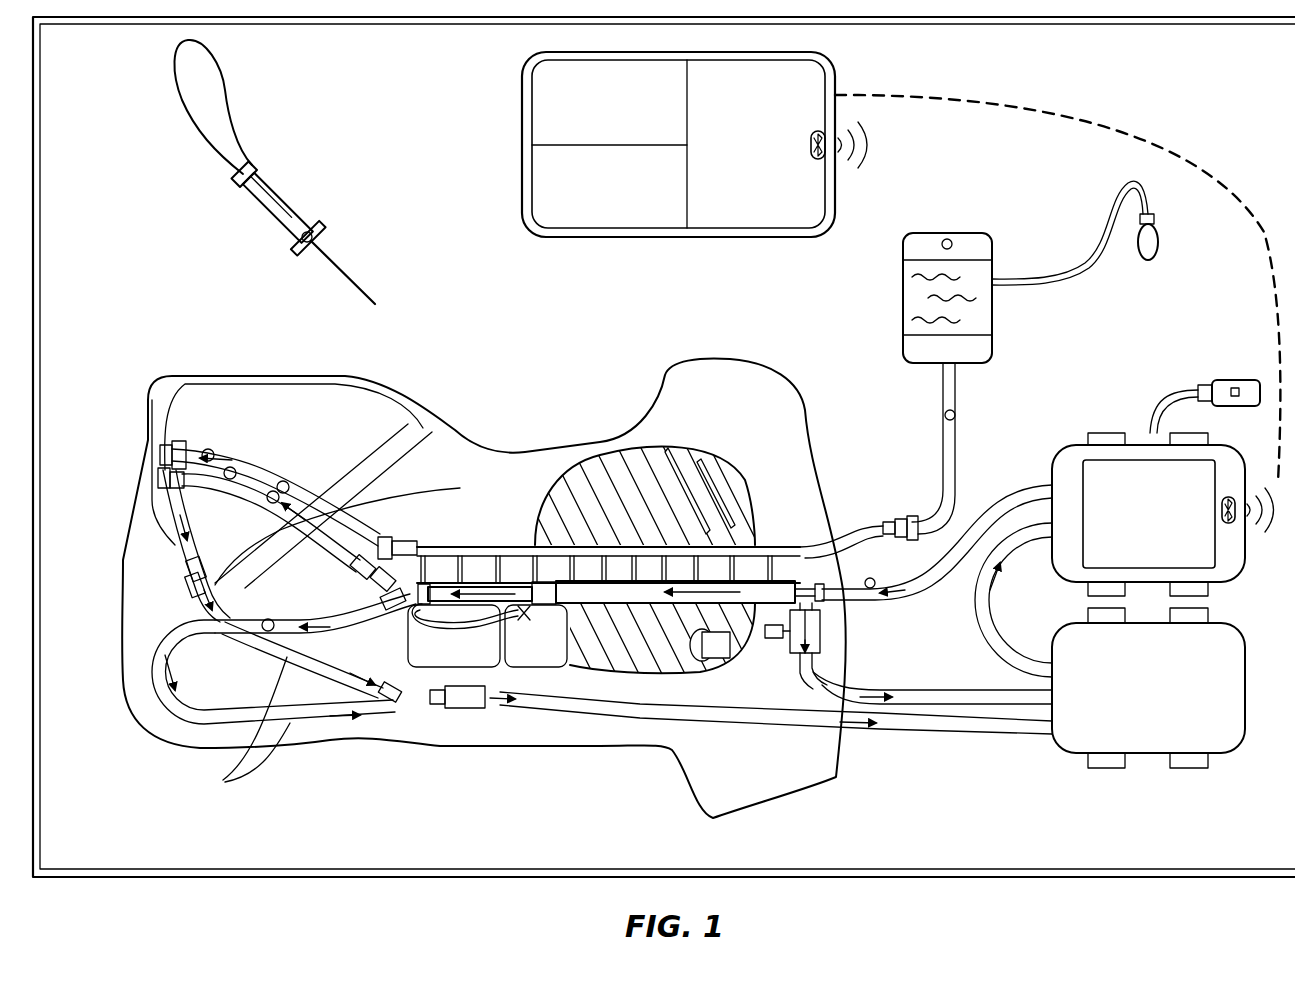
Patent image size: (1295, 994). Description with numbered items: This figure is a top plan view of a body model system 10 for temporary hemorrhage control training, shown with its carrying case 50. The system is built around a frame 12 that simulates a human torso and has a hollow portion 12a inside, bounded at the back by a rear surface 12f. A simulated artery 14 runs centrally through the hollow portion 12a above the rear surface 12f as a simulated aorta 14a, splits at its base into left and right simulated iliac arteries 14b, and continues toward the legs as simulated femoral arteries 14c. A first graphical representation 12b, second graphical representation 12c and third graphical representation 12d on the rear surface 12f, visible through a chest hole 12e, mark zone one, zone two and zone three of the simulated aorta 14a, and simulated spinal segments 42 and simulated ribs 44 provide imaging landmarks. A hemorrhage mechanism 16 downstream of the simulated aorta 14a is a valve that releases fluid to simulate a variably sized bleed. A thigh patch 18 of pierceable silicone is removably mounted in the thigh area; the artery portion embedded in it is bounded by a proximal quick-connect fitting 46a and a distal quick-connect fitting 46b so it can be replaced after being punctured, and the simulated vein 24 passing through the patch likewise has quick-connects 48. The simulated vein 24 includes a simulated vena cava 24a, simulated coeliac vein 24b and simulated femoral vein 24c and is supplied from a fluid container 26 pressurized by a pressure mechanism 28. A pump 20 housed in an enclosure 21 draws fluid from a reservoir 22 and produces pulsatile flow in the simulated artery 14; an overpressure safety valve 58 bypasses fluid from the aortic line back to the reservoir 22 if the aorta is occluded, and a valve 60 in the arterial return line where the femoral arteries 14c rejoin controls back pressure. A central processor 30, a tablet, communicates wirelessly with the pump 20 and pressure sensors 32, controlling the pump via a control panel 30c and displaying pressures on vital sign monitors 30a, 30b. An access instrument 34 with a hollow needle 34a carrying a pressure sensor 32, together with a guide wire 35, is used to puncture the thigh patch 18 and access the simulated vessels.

The body model system 10 is at (1165, 95).
The frame 12 is at (788, 448).
The hollow portion 12a is at (476, 490).
The first graphical representation 12b is at (625, 690).
The second graphical representation 12c is at (515, 685).
The third graphical representation 12d is at (478, 700).
The chest hole 12e is at (695, 456).
The rear surface 12f is at (445, 722).
The simulated artery 14 is at (172, 532).
The simulated aorta 14a is at (655, 585).
The simulated iliac artery 14b is at (310, 550).
The simulated femoral artery 14c is at (165, 477).
The hemorrhage mechanism 16 is at (497, 705).
The thigh patch 18 is at (295, 410).
The pump 20 is at (1163, 513).
The enclosure 21 is at (1110, 436).
The reservoir 22 is at (1148, 688).
The simulated vein 24 is at (958, 456).
The simulated vena cava 24a is at (524, 545).
The simulated coeliac vein 24b is at (373, 450).
The simulated femoral vein 24c is at (162, 450).
The fluid container 26 is at (966, 233).
The pressure mechanism 28 is at (1158, 246).
The central processor 30 is at (675, 237).
The vital sign monitor 30a is at (535, 100).
The vital sign monitor 30b is at (535, 185).
The control panel 30c is at (768, 230).
The pressure sensor 32 is at (297, 237).
The access instrument 34 is at (283, 203).
The needle 34a is at (348, 272).
The guide wire 35 is at (193, 112).
The simulated spinal segments 42 is at (548, 582).
The simulated ribs 44 is at (720, 512).
The proximal quick-connect fitting 46a is at (355, 576).
The distal quick-connect fitting 46b is at (186, 572).
The quick-connects 48 is at (390, 537).
The carrying case 50 is at (1015, 877).
The overpressure safety valve 58 is at (822, 633).
The valve 60 is at (445, 704).